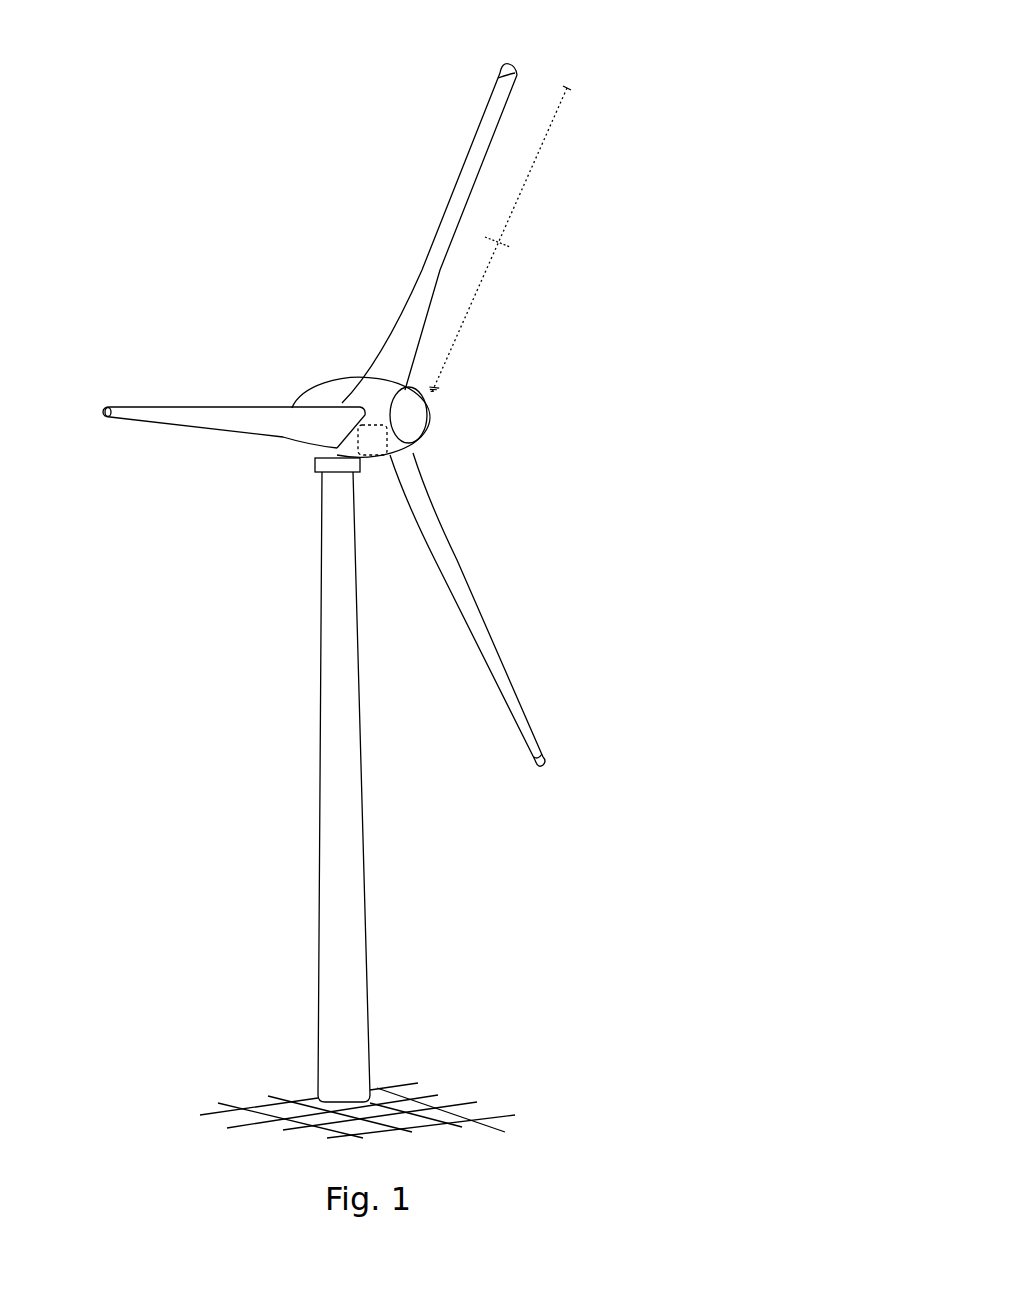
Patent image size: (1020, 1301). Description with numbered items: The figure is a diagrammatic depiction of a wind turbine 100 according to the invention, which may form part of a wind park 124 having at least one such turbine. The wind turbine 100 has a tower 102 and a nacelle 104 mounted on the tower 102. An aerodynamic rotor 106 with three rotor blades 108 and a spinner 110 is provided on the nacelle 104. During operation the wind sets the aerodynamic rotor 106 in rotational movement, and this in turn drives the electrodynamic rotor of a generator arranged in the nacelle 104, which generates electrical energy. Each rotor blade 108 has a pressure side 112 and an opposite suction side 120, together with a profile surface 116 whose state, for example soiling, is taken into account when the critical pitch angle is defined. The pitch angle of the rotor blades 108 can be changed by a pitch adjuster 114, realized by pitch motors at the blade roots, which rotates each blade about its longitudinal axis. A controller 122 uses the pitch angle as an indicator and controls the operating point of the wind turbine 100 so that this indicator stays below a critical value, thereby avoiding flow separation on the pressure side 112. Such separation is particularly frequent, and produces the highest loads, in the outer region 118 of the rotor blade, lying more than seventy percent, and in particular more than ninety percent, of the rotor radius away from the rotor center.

The wind turbine 100 is at (276, 542).
The tower 102 is at (347, 882).
The nacelle 104 is at (332, 390).
The aerodynamic rotor 106 is at (497, 337).
The rotor blades 108 is at (467, 185).
The spinner 110 is at (427, 415).
The pressure side 112 is at (193, 390).
The pitch adjuster 114 is at (283, 462).
The profile surface 116 is at (477, 552).
The outer region 118 is at (472, 82).
The suction side 120 is at (177, 447).
The controller 122 is at (372, 458).
The wind park 124 is at (682, 182).